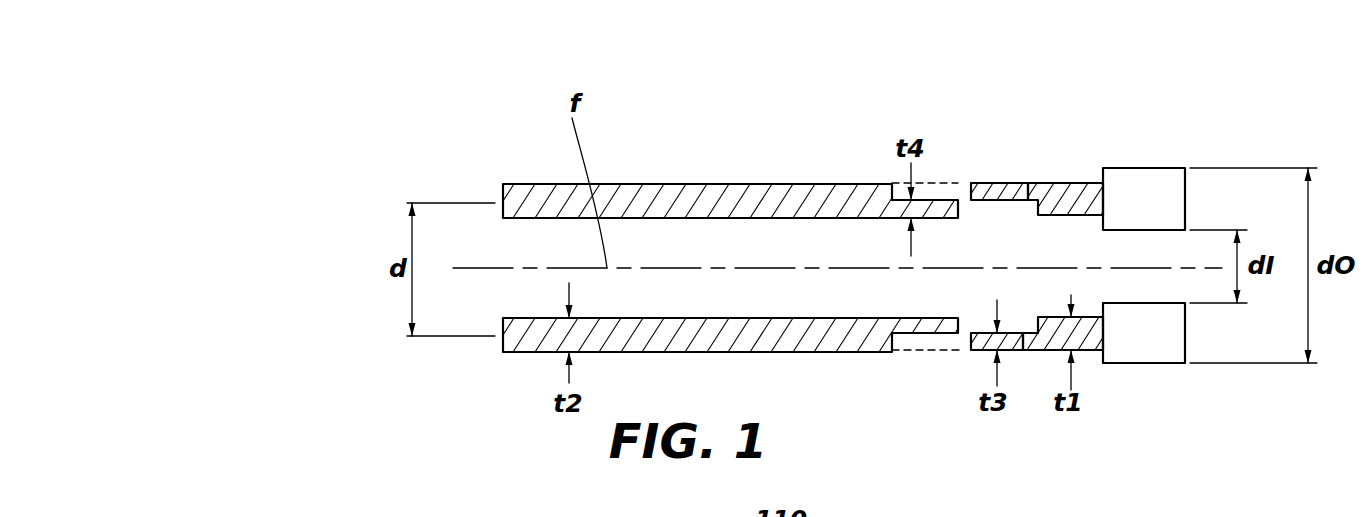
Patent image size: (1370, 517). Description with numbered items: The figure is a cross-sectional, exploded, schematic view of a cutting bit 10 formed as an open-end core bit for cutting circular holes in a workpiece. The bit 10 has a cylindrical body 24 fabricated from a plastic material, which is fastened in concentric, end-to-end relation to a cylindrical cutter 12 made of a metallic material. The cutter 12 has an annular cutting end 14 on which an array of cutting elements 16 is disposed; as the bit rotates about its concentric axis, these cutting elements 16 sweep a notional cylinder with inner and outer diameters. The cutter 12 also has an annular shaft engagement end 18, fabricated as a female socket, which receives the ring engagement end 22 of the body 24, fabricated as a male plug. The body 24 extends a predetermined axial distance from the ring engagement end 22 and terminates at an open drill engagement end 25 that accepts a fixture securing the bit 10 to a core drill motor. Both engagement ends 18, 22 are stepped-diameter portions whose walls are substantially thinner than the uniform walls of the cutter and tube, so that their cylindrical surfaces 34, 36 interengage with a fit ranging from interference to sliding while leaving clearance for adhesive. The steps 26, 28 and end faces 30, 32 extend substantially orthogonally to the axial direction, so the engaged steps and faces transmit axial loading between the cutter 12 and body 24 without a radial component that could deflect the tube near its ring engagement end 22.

The cutting bit 10 is at (784, 131).
The cutter 12 is at (1042, 381).
The annular cutting end 14 is at (1105, 193).
The cutting elements 16 is at (1153, 193).
The shaft engagement end 18 is at (995, 182).
The ring engagement end 22 is at (927, 381).
The cylindrical body 24 is at (735, 183).
The drill engagement end 25 is at (494, 234).
The step 26 is at (1038, 214).
The step 28 is at (893, 343).
The end face 30 is at (967, 192).
The end face 32 is at (958, 321).
The cylindrical surface 34 is at (1009, 333).
The cylindrical surface 36 is at (912, 336).